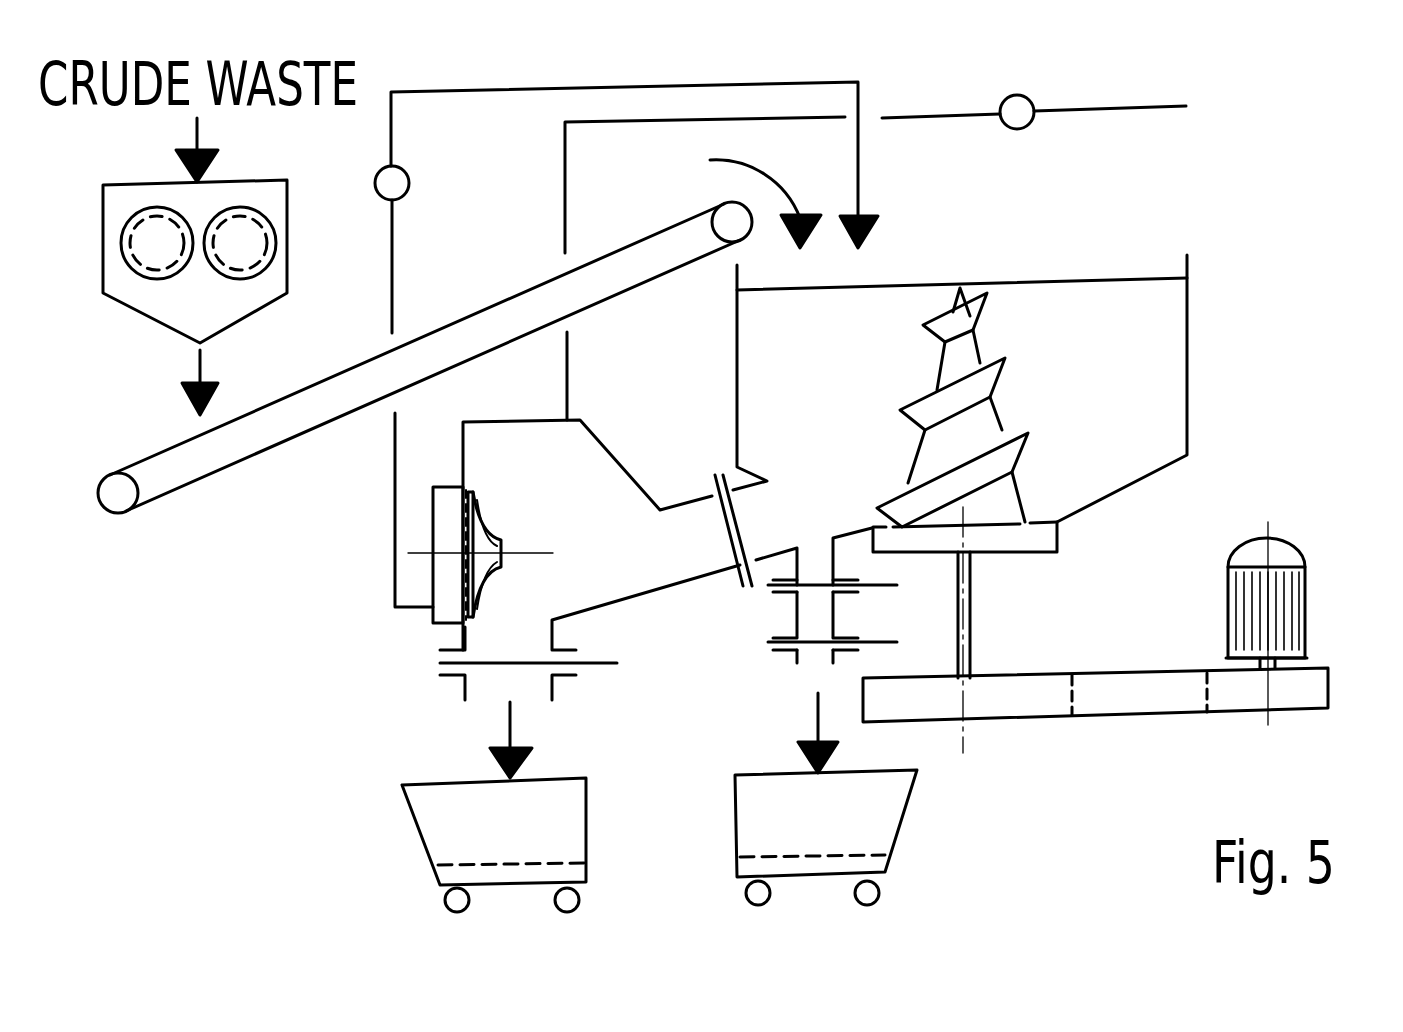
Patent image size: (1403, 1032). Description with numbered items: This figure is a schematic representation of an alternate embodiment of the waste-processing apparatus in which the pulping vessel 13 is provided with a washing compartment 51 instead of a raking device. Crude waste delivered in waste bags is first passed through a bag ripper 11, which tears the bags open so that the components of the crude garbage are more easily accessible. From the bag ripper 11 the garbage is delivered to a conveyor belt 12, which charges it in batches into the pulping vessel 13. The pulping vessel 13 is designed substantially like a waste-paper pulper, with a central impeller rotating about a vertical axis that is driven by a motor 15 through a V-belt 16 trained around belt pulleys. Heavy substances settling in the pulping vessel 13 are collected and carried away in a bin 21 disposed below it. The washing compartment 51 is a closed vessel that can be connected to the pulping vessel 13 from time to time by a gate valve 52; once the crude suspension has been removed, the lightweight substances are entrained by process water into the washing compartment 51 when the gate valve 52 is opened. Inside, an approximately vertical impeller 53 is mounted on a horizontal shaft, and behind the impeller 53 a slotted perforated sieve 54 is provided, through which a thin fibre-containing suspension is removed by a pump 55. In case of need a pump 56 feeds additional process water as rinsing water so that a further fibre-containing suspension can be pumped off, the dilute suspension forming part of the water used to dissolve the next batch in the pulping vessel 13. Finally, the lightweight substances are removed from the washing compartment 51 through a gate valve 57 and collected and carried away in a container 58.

The bag ripper 11 is at (288, 226).
The conveyor belt 12 is at (307, 440).
The pulping vessel 13 is at (1190, 382).
The motor 15 is at (1313, 638).
The V-belt 16 is at (1100, 668).
The bin 21 is at (908, 820).
The washing compartment 51 is at (592, 427).
The gate valve 52 is at (713, 474).
The impeller 53 is at (478, 508).
The perforated sieve 54 is at (462, 503).
The pump 55 is at (398, 172).
The pump 56 is at (1022, 95).
The gate valve 57 is at (597, 656).
The container 58 is at (592, 825).